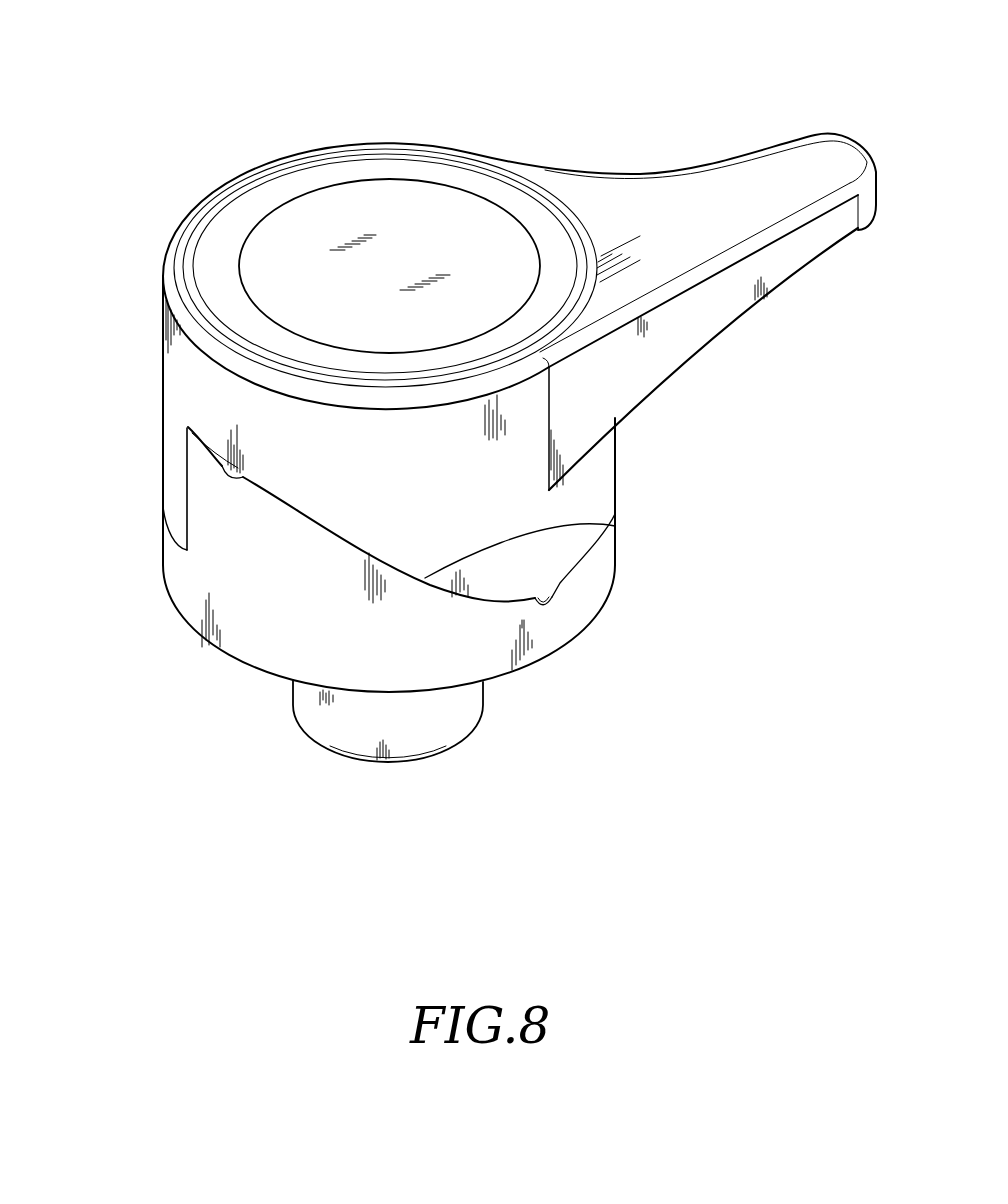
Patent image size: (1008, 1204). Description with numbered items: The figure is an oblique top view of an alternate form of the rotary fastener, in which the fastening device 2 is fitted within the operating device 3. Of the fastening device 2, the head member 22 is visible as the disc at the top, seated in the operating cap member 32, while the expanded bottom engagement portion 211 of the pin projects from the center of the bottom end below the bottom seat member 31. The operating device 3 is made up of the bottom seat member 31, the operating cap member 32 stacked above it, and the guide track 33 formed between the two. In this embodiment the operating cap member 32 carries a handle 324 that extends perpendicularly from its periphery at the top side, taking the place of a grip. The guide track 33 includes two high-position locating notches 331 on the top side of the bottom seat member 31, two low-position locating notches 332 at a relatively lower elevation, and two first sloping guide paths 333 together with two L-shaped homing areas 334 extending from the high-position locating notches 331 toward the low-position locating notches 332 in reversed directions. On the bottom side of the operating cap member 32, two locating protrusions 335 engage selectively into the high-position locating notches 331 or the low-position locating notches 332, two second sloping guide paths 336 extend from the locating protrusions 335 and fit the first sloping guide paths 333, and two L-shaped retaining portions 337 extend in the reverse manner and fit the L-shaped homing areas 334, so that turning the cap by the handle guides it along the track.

The fastening device 2 is at (395, 72).
The head member 22 is at (388, 192).
The expanded bottom engagement portion 211 is at (417, 743).
The operating device 3 is at (706, 460).
The bottom seat member 31 is at (497, 662).
The operating cap member 32 is at (600, 465).
The handle 324 is at (747, 173).
The guide track 33 is at (94, 426).
The high-position locating notches 331 is at (223, 468).
The low-position locating notches 332 is at (550, 600).
The first sloping guide paths 333 is at (325, 530).
The L-shaped homing areas 334 is at (167, 530).
The locating protrusions 335 is at (548, 594).
The second sloping guide paths 336 is at (615, 526).
The L-shaped retaining portions 337 is at (187, 500).